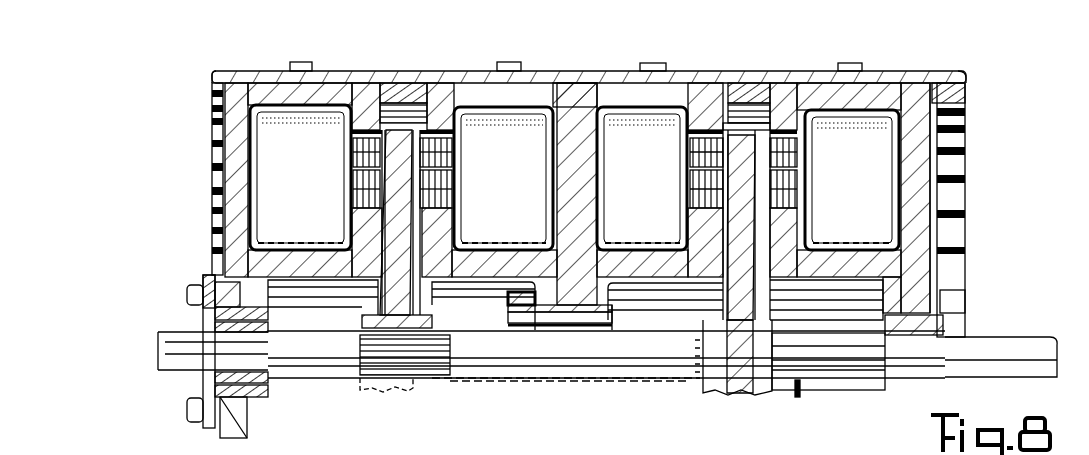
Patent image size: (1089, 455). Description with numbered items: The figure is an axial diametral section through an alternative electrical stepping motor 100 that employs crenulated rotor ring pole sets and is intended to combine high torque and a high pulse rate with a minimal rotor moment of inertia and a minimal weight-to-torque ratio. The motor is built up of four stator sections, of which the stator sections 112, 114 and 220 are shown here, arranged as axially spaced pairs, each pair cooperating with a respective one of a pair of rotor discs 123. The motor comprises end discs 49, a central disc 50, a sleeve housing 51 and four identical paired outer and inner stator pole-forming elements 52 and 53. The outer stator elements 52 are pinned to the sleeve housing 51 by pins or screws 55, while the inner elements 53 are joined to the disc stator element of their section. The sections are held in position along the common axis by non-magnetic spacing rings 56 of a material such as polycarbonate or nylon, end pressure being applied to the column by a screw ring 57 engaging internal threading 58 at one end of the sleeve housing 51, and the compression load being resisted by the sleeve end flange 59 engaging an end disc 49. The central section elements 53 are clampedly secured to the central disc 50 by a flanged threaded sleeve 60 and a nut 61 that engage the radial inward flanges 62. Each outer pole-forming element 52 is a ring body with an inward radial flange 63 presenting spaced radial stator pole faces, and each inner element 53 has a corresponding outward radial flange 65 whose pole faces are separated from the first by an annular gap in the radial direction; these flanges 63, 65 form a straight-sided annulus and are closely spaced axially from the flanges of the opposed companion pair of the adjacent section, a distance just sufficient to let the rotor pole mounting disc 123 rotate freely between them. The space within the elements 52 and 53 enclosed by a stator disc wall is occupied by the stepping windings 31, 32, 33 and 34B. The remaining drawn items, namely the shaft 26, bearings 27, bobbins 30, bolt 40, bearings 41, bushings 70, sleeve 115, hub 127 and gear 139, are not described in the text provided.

The electrical stepping motor 100 is at (250, 57).
The shaft 26 is at (158, 345).
The bearing 27 is at (270, 388).
The coil bobbin 30 is at (310, 200).
The stepping winding 31 is at (302, 165).
The stepping winding 32 is at (515, 162).
The stepping winding 33 is at (655, 162).
The stepping winding 34B is at (876, 165).
The bolt 40 is at (196, 292).
The bearing 41 is at (222, 290).
The end disc 49 is at (228, 168).
The central disc 50 is at (578, 110).
The sleeve housing 51 is at (735, 85).
The outer stator pole-forming element 52 is at (285, 80).
The inner stator pole-forming element 53 is at (350, 268).
The pins or screws 55 is at (310, 63).
The non-magnetic spacing ring 56 is at (400, 90).
The screw ring 57 is at (950, 100).
The internal threading 58 is at (962, 72).
The sleeve end flange 59 is at (214, 78).
The flanged threaded sleeve 60 is at (575, 320).
The nut 61 is at (522, 318).
The radial inward flange 62 is at (265, 268).
The inward radial flange 63 is at (372, 100).
The outward radial flange 65 is at (378, 195).
The bushing 70 is at (358, 150).
The stator section 112 is at (333, 402).
The stator section 114 is at (640, 384).
The sleeve 115 is at (485, 386).
The rotor disc 123 is at (440, 310).
The hub 127 is at (280, 320).
The gear 139 is at (400, 393).
The stator section 220 is at (797, 400).